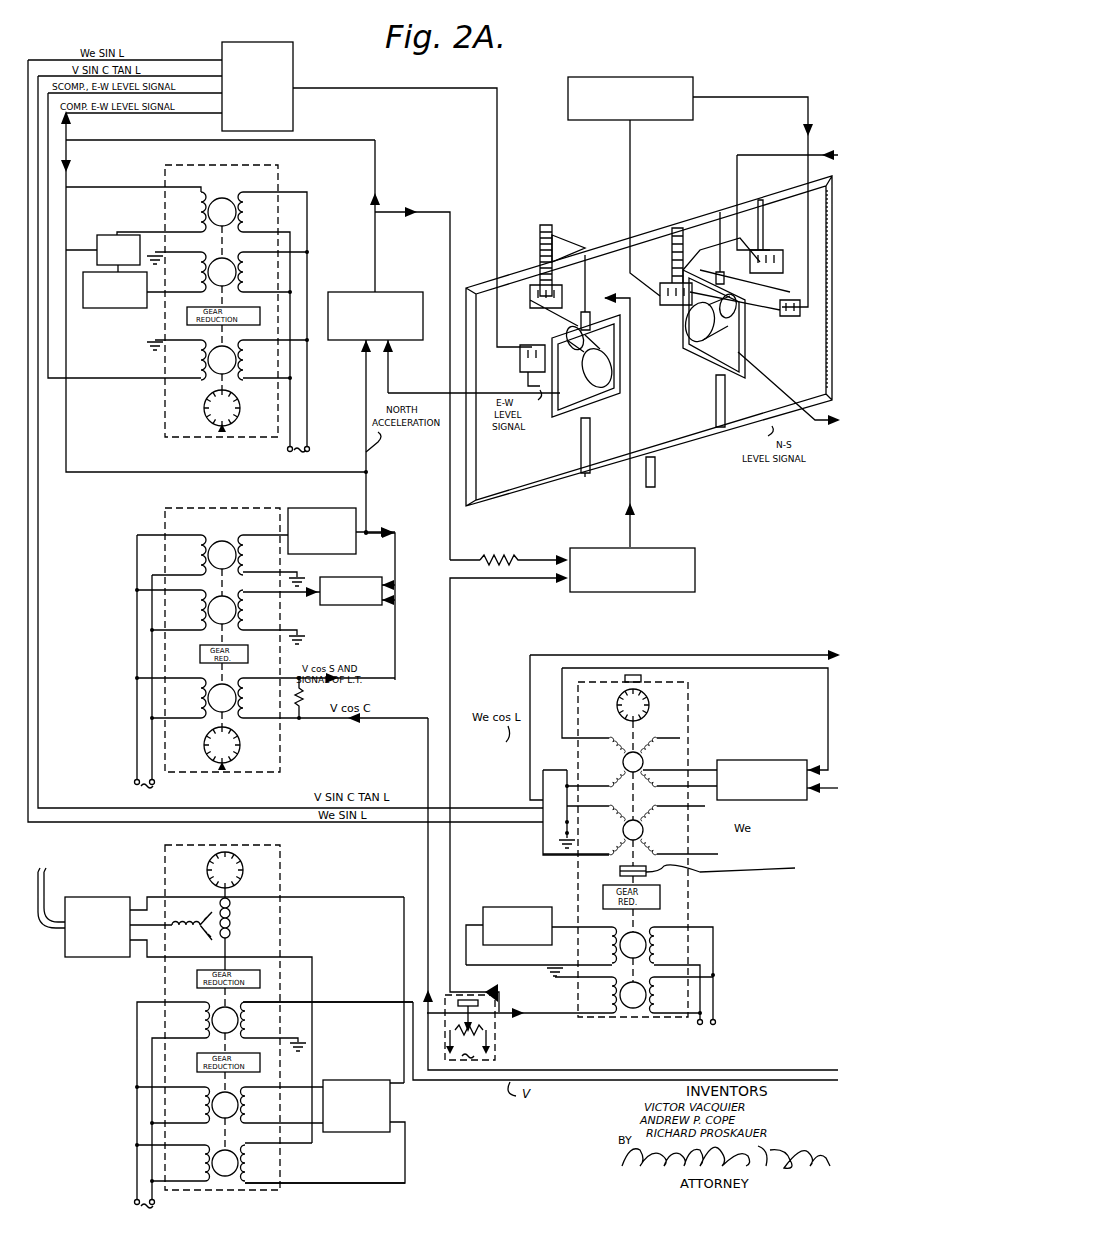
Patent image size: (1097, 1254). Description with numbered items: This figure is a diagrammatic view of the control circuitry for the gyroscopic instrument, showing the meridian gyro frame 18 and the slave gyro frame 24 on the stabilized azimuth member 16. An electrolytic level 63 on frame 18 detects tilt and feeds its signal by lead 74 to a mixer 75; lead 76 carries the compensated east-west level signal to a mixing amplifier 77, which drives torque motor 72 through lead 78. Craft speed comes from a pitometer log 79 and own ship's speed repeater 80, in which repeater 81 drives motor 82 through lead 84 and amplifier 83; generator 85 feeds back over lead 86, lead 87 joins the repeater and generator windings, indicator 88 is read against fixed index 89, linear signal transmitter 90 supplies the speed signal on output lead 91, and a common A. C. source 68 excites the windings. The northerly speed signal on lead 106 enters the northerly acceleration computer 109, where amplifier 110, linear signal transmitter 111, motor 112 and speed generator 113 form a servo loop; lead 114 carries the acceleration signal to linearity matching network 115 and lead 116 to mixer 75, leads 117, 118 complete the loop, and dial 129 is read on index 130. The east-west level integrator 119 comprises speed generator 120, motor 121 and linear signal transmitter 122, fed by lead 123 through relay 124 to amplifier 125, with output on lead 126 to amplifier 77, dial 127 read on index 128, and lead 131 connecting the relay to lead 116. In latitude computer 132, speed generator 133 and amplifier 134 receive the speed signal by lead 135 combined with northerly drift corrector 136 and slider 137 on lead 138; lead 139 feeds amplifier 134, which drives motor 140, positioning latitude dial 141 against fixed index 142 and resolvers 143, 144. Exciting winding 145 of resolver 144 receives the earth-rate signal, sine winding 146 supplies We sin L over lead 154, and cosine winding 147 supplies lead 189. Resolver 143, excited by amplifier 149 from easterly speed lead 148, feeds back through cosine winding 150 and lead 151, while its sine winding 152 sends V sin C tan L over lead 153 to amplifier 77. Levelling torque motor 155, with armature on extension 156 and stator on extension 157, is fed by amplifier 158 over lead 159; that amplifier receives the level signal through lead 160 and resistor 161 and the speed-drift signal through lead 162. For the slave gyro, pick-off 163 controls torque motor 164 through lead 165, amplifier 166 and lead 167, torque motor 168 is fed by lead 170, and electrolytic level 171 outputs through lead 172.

The stabilized azimuth member 16 is at (652, 226).
The meridian gyro frame 18 is at (622, 376).
The slave gyro frame 24 is at (712, 356).
The electrolytic level 63 is at (616, 308).
The common A. C. source 68 is at (134, 1200).
The torque motor 72 is at (518, 378).
The lead 74 is at (412, 394).
The mixer 75 is at (400, 292).
The lead 76 is at (130, 130).
The mixing amplifier 77 is at (294, 72).
The lead 78 is at (498, 188).
The pitometer log 79 is at (110, 896).
The own ship's speed repeater 80 is at (221, 1025).
The electrical repeater 81 is at (240, 934).
The motor 82 is at (236, 1098).
The amplifier 83 is at (360, 1080).
The lead 84 is at (404, 940).
The generator 85 is at (236, 1150).
The lead 86 is at (404, 1156).
The lead 87 is at (312, 1036).
The indicator 88 is at (216, 848).
The fixed index 89 is at (218, 846).
The linear signal transmitter 90 is at (236, 1024).
The output lead 91 is at (358, 1000).
The lead 106 is at (372, 722).
The northerly acceleration computer 109 is at (188, 506).
The amplifier 110 is at (338, 604).
The linear signal transmitter 111 is at (234, 690).
The motor 112 is at (228, 598).
The speed generator 113 is at (222, 540).
The lead 114 is at (262, 530).
The linearity matching network 115 is at (334, 554).
The lead 116 is at (360, 404).
The lead 117 is at (398, 558).
The lead 118 is at (398, 646).
The east-west level integrator 119 is at (282, 176).
The speed generator 120 is at (216, 198).
The motor 121 is at (234, 256).
The linear signal transmitter 122 is at (230, 342).
The lead 123 is at (112, 190).
The relay 124 is at (94, 238).
The amplifier 125 is at (112, 308).
The lead 126 is at (114, 378).
The dial 127 is at (240, 406).
The index 128 is at (200, 432).
The dial 129 is at (198, 748).
The index 130 is at (232, 766).
The lead 131 is at (112, 472).
The latitude computer 132 is at (690, 724).
The speed generator 133 is at (626, 984).
The amplifier 134 is at (536, 908).
The connecting lead 135 is at (416, 980).
The northerly drift corrector 136 is at (496, 1044).
The slider 137 is at (470, 1022).
The lead 138 is at (574, 1012).
The lead 139 is at (492, 976).
The motor 140 is at (662, 930).
The latitude dial 141 is at (614, 710).
The fixed index 142 is at (664, 700).
The sine-cosine synchro resolver 143 is at (662, 760).
The sine-cosine synchro resolver 144 is at (654, 812).
The exciting winding 145 is at (650, 848).
The sine winding 146 is at (624, 858).
The cosine winding 147 is at (610, 814).
The connecting lead 148 is at (826, 796).
The amplifier 149 is at (782, 760).
The cosine winding 150 is at (598, 744).
The lead 151 is at (552, 694).
The sine winding 152 is at (612, 790).
The lead 153 is at (44, 64).
The lead 154 is at (46, 50).
The torque motor 155 is at (524, 262).
The extension 156 is at (556, 240).
The extension 157 is at (546, 324).
The amplifier 158 is at (710, 548).
The lead 159 is at (632, 426).
The lead 160 is at (456, 254).
The resistor 161 is at (528, 556).
The lead 162 is at (504, 580).
The pick-off 163 is at (668, 310).
The torque motor 164 is at (788, 340).
The lead 165 is at (622, 184).
The amplifier 166 is at (696, 84).
The lead 167 is at (752, 98).
The torque motor 168 is at (752, 220).
The lead 170 is at (732, 172).
The electrolytic level 171 is at (686, 348).
The lead 172 is at (755, 376).
The lead 189 is at (776, 652).